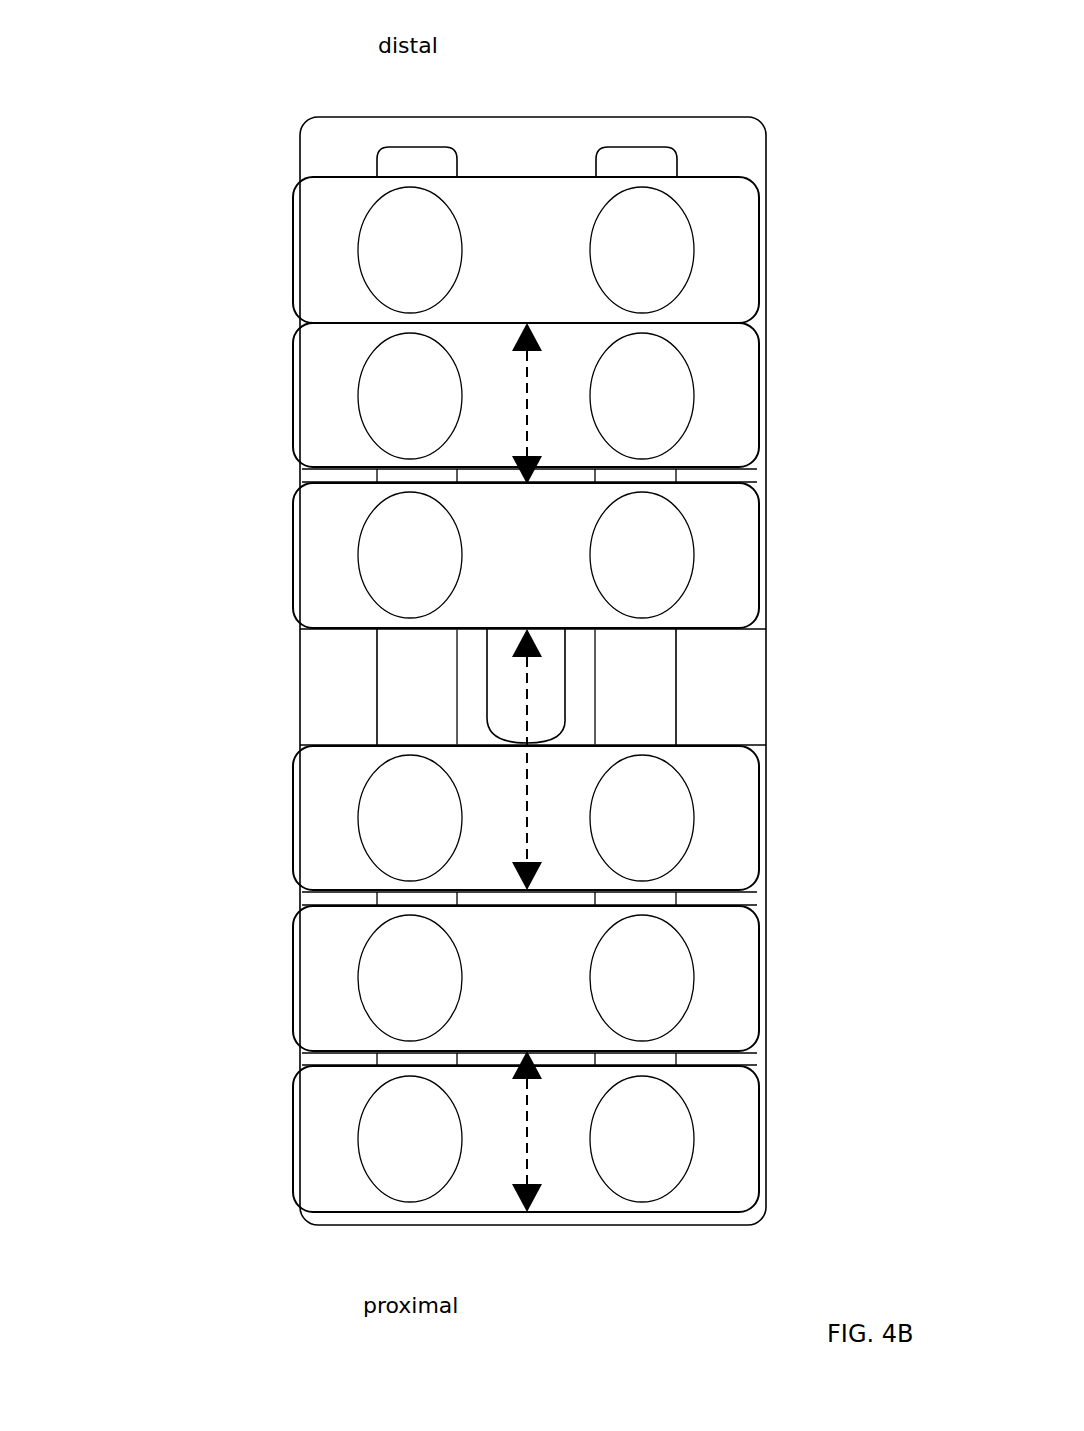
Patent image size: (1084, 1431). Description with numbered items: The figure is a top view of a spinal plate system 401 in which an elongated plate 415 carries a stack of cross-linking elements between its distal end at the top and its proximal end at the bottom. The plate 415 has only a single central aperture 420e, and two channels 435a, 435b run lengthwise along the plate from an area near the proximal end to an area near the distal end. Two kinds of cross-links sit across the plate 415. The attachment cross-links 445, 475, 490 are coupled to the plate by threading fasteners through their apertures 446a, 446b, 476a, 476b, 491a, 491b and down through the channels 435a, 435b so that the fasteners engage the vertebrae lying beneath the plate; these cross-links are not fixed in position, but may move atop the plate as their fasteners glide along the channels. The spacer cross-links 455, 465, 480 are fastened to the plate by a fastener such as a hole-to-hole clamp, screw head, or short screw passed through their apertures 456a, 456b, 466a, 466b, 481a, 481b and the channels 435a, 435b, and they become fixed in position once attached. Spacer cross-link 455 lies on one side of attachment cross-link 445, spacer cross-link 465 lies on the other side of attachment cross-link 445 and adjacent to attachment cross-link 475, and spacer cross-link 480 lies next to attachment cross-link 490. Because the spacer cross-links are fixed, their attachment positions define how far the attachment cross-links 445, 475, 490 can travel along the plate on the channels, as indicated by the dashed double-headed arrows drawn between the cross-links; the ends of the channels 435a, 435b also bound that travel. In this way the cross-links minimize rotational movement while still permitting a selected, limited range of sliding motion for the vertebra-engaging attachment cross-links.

The instrument assembly 401 is at (659, 88).
The housing frame 415 is at (440, 668).
The spacer cross-link 455 is at (499, 240).
The aperture 456a is at (302, 240).
The aperture 456b is at (759, 235).
The attachment cross-link 445 is at (508, 377).
The aperture 446a is at (302, 387).
The aperture 446b is at (759, 373).
The spacer cross-link 465 is at (514, 541).
The aperture 466a is at (302, 536).
The aperture 466b is at (759, 537).
The channel 435a is at (293, 687).
The channel 435b is at (747, 668).
The central aperture 420e is at (704, 686).
The attachment cross-link 475 is at (508, 794).
The aperture 476a is at (302, 789).
The aperture 476b is at (759, 801).
The spacer cross-link 480 is at (508, 951).
The aperture 481a is at (301, 946).
The aperture 481b is at (759, 948).
The attachment cross-link 490 is at (508, 1155).
The aperture 491a is at (294, 1185).
The aperture 491b is at (759, 1108).